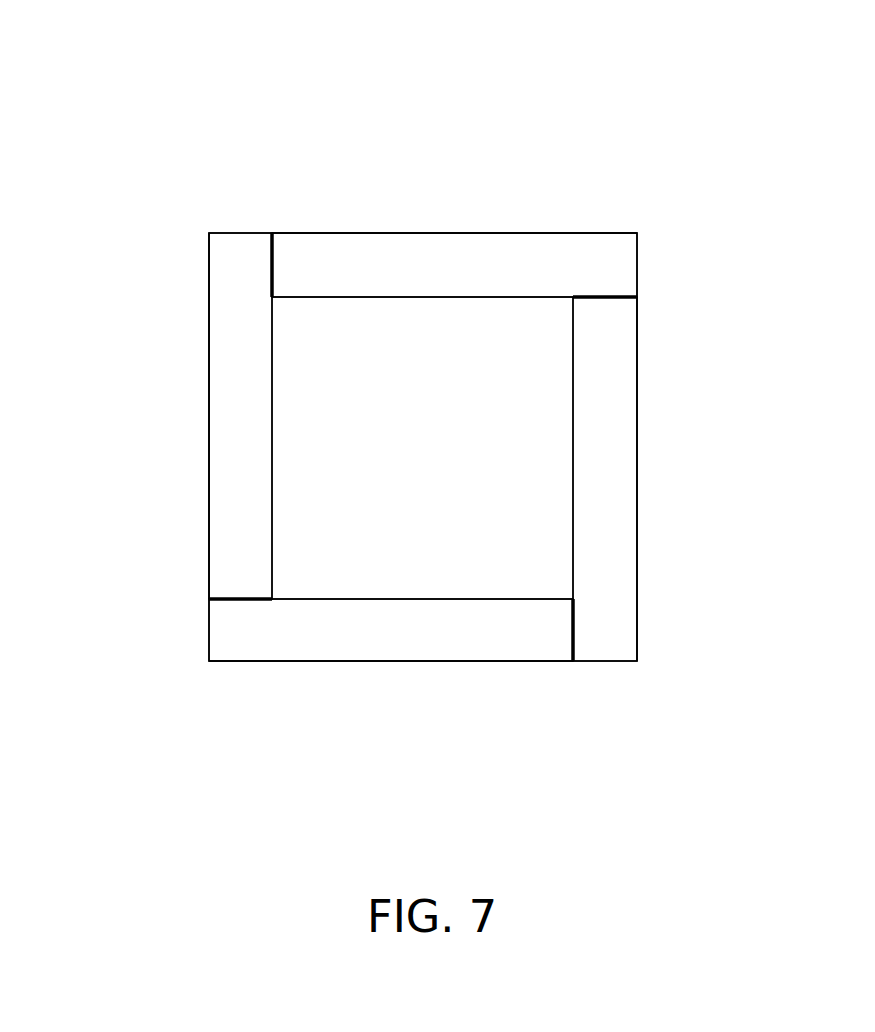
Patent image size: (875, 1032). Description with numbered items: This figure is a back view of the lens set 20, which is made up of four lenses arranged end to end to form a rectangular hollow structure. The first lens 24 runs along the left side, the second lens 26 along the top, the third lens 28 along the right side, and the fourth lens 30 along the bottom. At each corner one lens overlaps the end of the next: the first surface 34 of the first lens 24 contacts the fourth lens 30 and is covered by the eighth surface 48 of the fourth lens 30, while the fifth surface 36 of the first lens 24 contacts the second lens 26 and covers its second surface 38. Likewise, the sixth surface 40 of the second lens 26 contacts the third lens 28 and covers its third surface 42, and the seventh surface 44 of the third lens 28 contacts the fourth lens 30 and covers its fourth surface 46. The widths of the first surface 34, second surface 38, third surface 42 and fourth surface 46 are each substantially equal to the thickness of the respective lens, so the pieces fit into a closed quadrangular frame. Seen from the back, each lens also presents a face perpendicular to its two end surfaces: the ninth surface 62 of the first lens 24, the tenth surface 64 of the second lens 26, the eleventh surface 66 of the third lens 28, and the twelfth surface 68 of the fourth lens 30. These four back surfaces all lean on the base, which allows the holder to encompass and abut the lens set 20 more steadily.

The lens set 20 is at (717, 140).
The first lens 24 is at (243, 415).
The second lens 26 is at (447, 268).
The third lens 28 is at (603, 472).
The fourth lens 30 is at (402, 625).
The first surface 34 is at (240, 598).
The fifth surface 36 is at (273, 417).
The second surface 38 is at (272, 265).
The sixth surface 40 is at (398, 297).
The third surface 42 is at (607, 296).
The seventh surface 44 is at (573, 475).
The fourth surface 46 is at (573, 632).
The eighth surface 48 is at (392, 598).
The ninth surface 62 is at (247, 323).
The tenth surface 64 is at (392, 267).
The eleventh surface 66 is at (613, 385).
The twelfth surface 68 is at (255, 628).